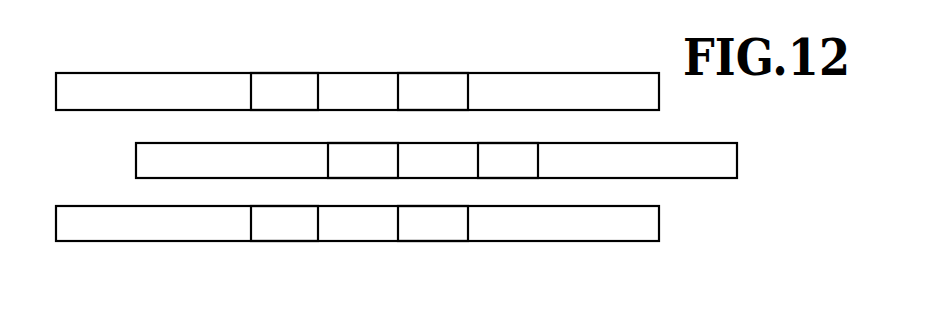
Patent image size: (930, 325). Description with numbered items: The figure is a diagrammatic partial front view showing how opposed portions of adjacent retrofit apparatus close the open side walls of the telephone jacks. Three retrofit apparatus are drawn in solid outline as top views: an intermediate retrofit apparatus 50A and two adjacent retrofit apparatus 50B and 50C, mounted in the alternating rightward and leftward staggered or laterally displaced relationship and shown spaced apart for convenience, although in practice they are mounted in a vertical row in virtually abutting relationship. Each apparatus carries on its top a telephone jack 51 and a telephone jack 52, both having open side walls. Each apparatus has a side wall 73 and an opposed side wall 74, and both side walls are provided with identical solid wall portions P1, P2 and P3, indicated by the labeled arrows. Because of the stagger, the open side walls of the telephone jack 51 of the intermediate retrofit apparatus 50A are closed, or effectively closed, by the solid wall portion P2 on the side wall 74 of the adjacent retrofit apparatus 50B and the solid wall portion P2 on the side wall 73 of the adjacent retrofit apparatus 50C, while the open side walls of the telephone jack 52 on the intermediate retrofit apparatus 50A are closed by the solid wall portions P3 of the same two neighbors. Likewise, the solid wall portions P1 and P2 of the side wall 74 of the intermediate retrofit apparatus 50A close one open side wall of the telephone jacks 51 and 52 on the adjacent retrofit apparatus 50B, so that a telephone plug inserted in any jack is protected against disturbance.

The intermediate retrofit apparatus 50A is at (746, 164).
The adjacent retrofit apparatus 50B is at (668, 232).
The adjacent retrofit apparatus 50C is at (667, 95).
The telephone jack 51 is at (294, 102).
The telephone jack 52 is at (448, 102).
The side wall 73 is at (72, 111).
The opposed side wall 74 is at (86, 73).
The solid wall portion P1 is at (141, 111).
The solid wall portion P2 is at (377, 112).
The solid wall portion P3 is at (546, 113).